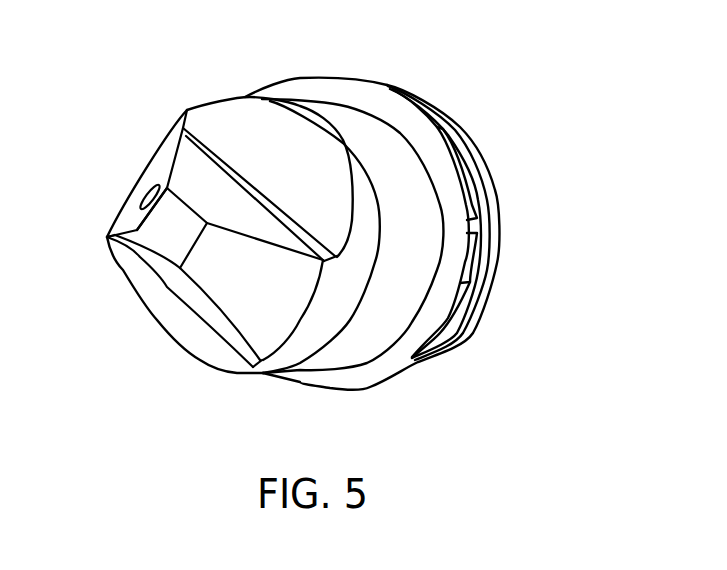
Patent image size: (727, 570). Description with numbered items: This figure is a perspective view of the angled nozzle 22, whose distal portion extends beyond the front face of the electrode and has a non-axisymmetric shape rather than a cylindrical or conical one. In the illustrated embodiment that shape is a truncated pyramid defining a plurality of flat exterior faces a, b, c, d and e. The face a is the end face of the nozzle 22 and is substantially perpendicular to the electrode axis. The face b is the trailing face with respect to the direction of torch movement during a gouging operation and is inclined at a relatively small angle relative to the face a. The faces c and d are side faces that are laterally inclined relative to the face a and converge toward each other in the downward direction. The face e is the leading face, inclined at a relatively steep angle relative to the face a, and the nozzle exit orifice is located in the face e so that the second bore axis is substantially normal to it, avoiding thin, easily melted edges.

The nozzle 22 is at (467, 117).
The end face a is at (176, 240).
The trailing face b is at (256, 300).
The side face c is at (220, 212).
The side face d is at (162, 268).
The leading face e is at (160, 163).